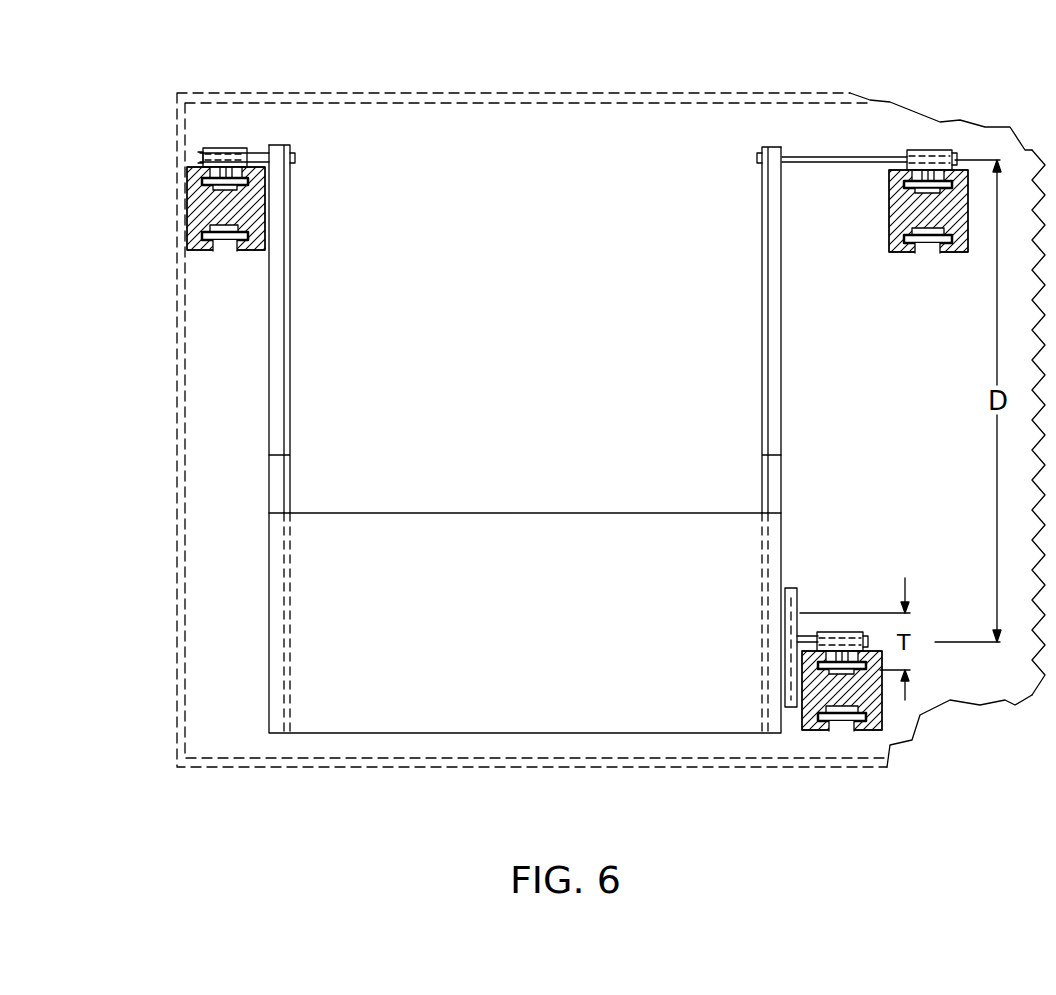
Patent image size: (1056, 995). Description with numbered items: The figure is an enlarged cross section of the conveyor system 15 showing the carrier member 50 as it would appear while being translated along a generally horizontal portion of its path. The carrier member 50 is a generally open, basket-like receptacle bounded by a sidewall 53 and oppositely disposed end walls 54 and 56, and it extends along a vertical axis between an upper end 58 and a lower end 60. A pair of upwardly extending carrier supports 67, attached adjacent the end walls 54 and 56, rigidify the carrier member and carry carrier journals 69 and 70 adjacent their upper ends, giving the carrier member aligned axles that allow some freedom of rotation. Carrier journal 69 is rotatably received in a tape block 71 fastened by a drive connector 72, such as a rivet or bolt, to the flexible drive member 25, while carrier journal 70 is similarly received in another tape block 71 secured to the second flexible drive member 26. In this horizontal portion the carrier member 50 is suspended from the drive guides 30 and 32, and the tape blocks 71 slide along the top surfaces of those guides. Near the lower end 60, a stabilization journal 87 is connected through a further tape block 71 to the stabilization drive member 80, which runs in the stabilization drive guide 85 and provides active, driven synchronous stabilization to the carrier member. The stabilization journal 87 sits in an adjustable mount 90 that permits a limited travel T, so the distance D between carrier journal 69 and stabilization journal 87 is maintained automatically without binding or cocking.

The conveyor system 15 is at (662, 128).
The flexible drive member 25 is at (897, 185).
The second flexible drive member 26 is at (233, 148).
The drive guide 30 is at (890, 220).
The drive guide 32 is at (193, 205).
The carrier member 50 is at (224, 472).
The sidewall 53 is at (536, 644).
The end wall 54 is at (780, 530).
The end wall 56 is at (269, 603).
The upper end 58 is at (306, 370).
The lower end 60 is at (256, 708).
The carrier support 67 is at (280, 266).
The carrier journal 69 is at (837, 158).
The carrier journal 70 is at (258, 147).
The tape block 71 is at (217, 148).
The drive connector 72 is at (207, 177).
The stabilization drive member 80 is at (842, 713).
The stabilization drive guide 85 is at (868, 700).
The stabilization journal 87 is at (797, 640).
The adjustable mount 90 is at (810, 585).